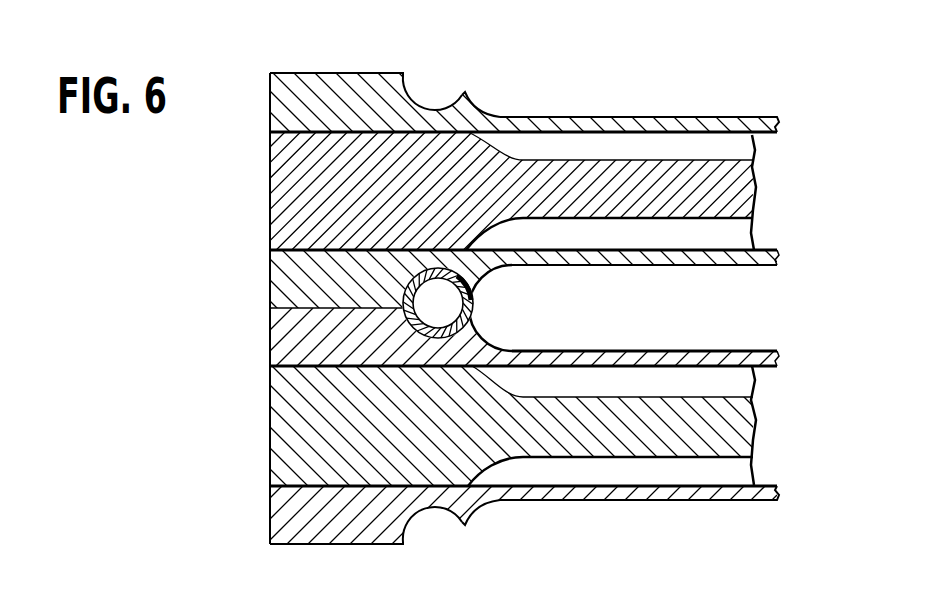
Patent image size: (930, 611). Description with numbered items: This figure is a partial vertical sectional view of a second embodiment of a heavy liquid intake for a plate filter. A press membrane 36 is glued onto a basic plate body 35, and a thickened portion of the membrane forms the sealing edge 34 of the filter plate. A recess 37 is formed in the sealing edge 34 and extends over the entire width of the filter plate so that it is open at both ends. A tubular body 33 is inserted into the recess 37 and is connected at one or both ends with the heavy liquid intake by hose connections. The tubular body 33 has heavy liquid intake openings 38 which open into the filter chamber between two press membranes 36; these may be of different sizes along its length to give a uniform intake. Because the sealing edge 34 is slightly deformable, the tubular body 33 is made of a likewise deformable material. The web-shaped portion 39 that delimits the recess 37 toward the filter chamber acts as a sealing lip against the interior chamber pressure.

The sealing edge 34 is at (351, 78).
The recess 37 is at (442, 96).
The web-shaped portion 39 is at (472, 96).
The press membrane 36 is at (661, 116).
The basic plate body 35 is at (757, 422).
The tubular body 33 is at (470, 274).
The heavy liquid intake openings 38 is at (470, 307).